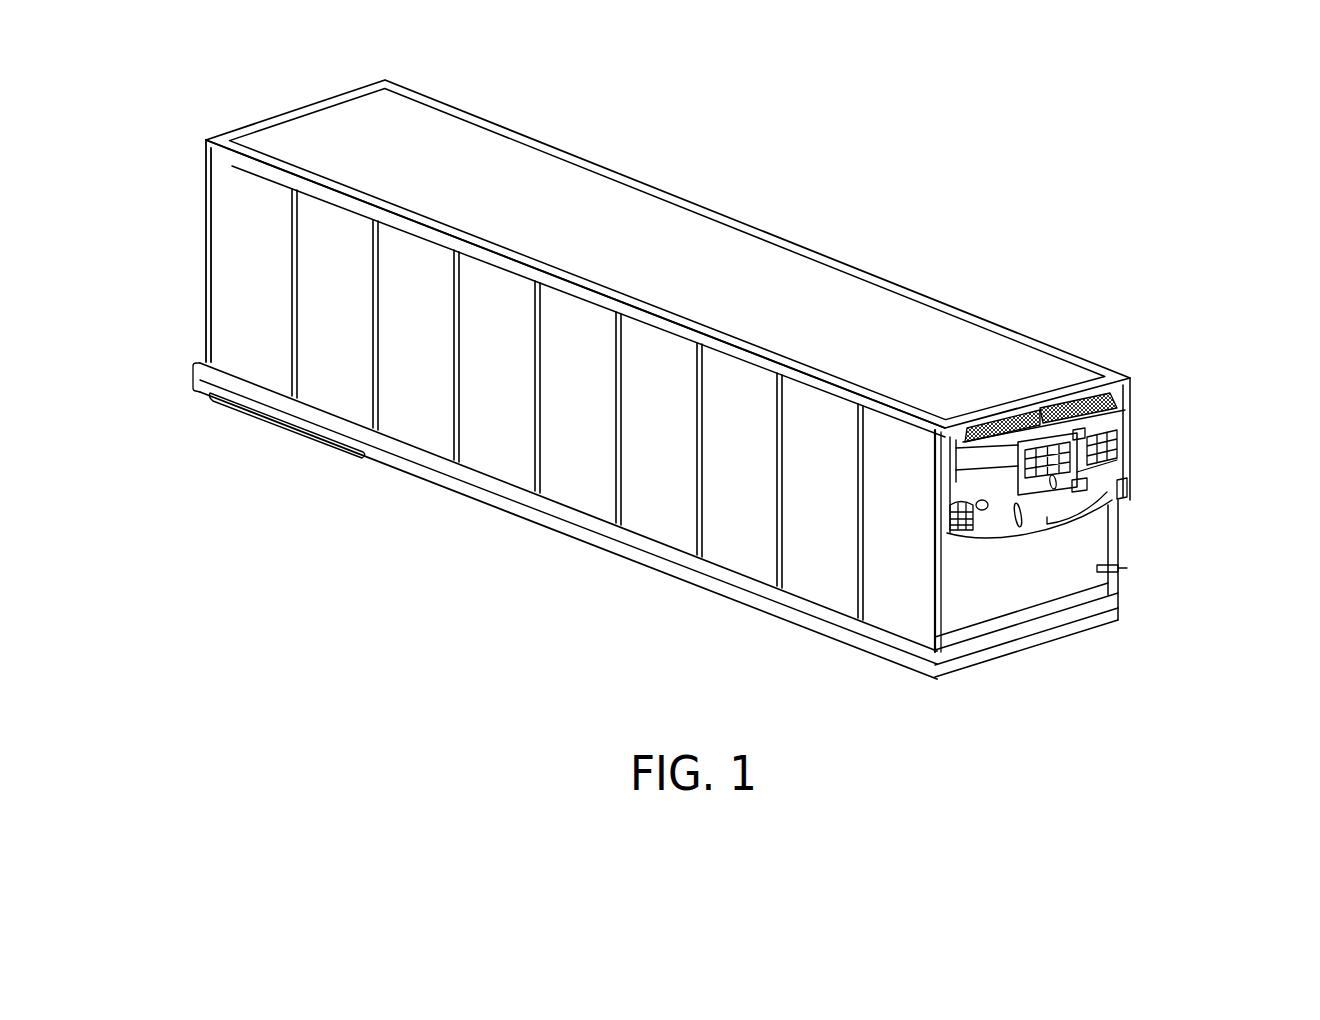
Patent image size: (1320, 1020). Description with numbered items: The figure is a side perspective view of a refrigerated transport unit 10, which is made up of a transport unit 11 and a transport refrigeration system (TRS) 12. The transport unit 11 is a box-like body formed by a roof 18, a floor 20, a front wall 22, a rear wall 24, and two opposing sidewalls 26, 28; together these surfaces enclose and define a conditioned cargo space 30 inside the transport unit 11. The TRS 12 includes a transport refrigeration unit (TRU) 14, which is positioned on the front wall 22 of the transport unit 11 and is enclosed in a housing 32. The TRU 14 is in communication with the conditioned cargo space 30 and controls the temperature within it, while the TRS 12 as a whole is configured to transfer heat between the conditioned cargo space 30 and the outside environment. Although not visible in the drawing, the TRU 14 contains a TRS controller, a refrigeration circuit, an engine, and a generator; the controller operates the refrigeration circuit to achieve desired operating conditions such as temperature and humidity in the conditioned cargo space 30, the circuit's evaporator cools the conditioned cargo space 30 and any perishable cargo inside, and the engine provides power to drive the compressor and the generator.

The refrigerated transport unit 10 is at (703, 386).
The transport unit 11 is at (640, 180).
The transport refrigeration system 12 is at (1109, 458).
The transport refrigeration unit 14 is at (1143, 470).
The roof 18 is at (668, 258).
The floor 20 is at (565, 521).
The front wall 22 is at (1050, 607).
The rear wall 24 is at (205, 247).
The sidewall 26 is at (369, 382).
The sidewall 28 is at (733, 223).
The conditioned cargo space 30 is at (843, 323).
The housing 32 is at (1132, 418).